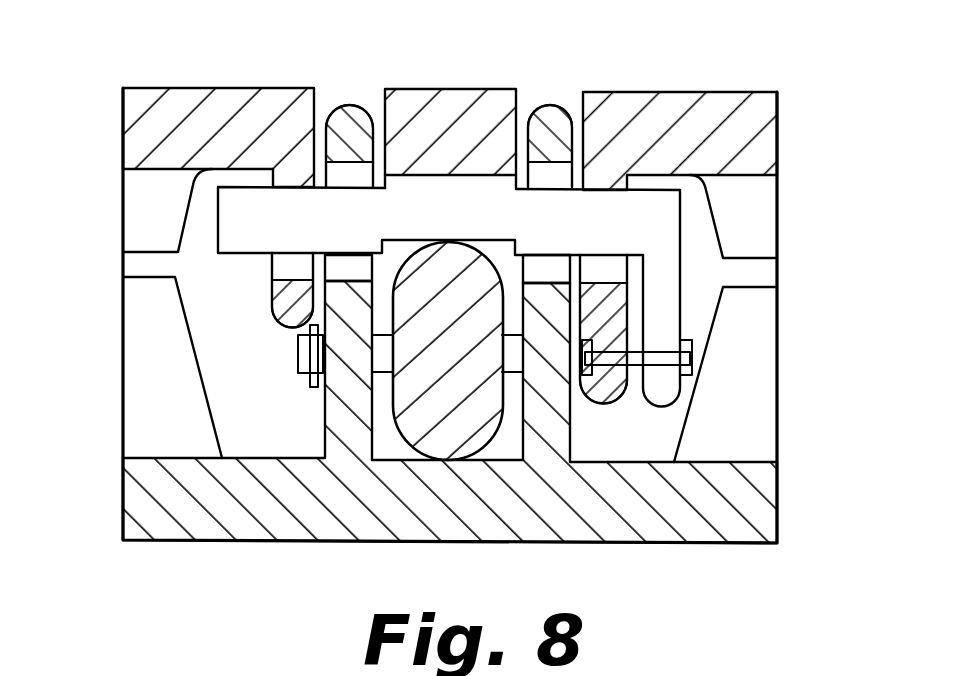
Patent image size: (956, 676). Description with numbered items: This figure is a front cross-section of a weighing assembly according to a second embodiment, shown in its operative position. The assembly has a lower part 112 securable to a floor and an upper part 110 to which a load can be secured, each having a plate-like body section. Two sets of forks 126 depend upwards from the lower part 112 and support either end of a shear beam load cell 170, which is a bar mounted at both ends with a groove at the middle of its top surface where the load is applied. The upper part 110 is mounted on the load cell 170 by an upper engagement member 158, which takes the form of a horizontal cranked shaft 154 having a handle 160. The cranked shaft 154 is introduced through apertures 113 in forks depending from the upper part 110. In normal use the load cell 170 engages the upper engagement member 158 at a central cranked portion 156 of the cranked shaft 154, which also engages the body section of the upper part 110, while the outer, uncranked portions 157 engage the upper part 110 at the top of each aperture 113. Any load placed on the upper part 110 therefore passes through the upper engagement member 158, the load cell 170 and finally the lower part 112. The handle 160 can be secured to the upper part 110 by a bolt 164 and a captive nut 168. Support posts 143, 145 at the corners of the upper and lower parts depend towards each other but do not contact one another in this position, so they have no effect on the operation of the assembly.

The upper part 110 is at (777, 137).
The lower part 112 is at (777, 503).
The aperture 113 is at (287, 187).
The forks 126 is at (323, 425).
The support posts 143 is at (123, 222).
The support posts 145 is at (123, 388).
The cranked shaft 154 is at (240, 255).
The central cranked portion 156 is at (433, 175).
The outer uncranked portions 157 is at (298, 187).
The upper engagement member 158 is at (680, 275).
The handle 160 is at (680, 325).
The bolt 164 is at (688, 375).
The captive nut 168 is at (575, 382).
The shear beam load cell 170 is at (415, 458).